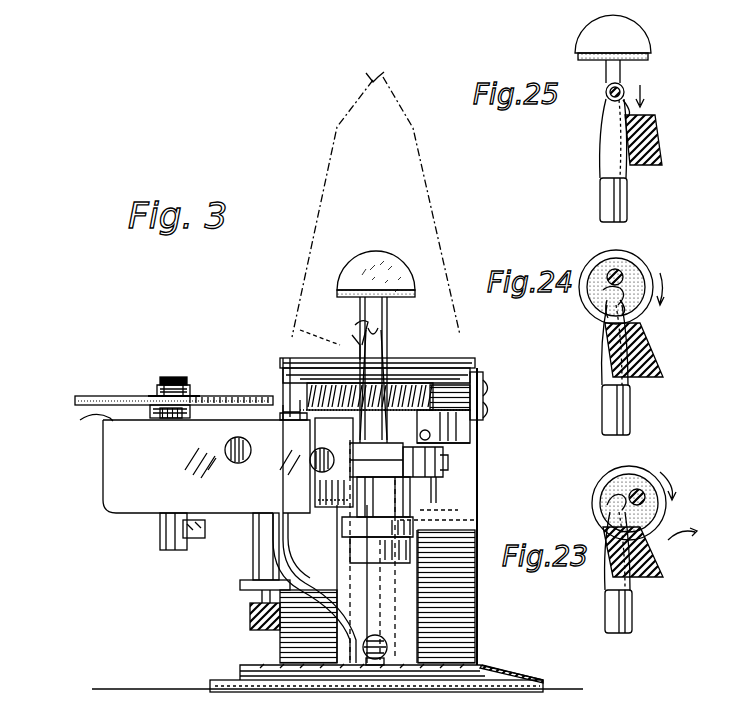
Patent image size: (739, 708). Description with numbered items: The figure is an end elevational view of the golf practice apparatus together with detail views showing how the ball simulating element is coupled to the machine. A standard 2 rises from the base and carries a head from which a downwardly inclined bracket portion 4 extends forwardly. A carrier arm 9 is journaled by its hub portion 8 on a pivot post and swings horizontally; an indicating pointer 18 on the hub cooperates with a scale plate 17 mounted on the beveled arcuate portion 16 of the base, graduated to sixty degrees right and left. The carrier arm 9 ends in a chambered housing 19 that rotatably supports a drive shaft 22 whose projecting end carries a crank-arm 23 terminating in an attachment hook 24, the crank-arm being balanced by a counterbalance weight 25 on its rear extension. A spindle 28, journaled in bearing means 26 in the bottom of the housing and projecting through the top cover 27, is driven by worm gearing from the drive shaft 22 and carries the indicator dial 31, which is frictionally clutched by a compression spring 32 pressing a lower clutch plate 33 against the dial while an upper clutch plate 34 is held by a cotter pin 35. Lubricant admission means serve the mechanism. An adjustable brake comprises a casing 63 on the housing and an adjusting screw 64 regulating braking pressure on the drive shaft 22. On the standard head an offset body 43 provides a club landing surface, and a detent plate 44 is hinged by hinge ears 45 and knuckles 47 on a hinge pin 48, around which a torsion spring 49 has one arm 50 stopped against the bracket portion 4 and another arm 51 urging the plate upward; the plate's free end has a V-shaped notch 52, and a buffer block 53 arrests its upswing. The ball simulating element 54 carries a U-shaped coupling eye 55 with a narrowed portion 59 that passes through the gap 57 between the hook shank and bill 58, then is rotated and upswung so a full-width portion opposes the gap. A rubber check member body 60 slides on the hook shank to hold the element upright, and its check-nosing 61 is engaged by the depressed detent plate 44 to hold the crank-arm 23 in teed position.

In FIG. 3, the standard 2 is at (458, 510).
In FIG. 3, the bracket portion 4 is at (468, 437).
In FIG. 3, the hub portion 8 is at (430, 598).
In FIG. 3, the carrier arm 9 is at (283, 550).
In FIG. 3, the arcuate portion 16 is at (530, 680).
In FIG. 3, the scale plate 17 is at (488, 665).
In FIG. 3, the indicating pointer 18 is at (373, 665).
In FIG. 3, the chambered housing 19 is at (115, 470).
In FIG. 3, the drive shaft 22 is at (448, 457).
In FIG. 3, the crank-arm 23 is at (364, 432).
In FIG. 25, the crank-arm 23 is at (622, 205).
In FIG. 24, the crank-arm 23 is at (604, 413).
In FIG. 23, the crank-arm 23 is at (628, 613).
In FIG. 3, the attachment hook 24 is at (390, 325).
In FIG. 25, the attachment hook 24 is at (605, 92).
In FIG. 24, the attachment hook 24 is at (622, 275).
In FIG. 23, the attachment hook 24 is at (637, 488).
In FIG. 3, the counterbalance weight 25 is at (413, 527).
In FIG. 3, the bearing means 26 is at (158, 541).
In FIG. 3, the top cover 27 is at (86, 421).
In FIG. 3, the spindle 28 is at (186, 377).
In FIG. 3, the indicator dial 31 is at (108, 396).
In FIG. 3, the compression spring 32 is at (178, 418).
In FIG. 3, the lower clutch plate 33 is at (158, 418).
In FIG. 3, the upper clutch plate 34 is at (152, 396).
In FIG. 3, the cotter pin 35 is at (187, 388).
In FIG. 3, the offset body 43 is at (458, 358).
In FIG. 3, the detent plate 44 is at (338, 175).
In FIG. 3, the hinge ears 45 is at (485, 407).
In FIG. 3, the hinge knuckles 47 is at (490, 383).
In FIG. 3, the hinge pin 48 is at (483, 372).
In FIG. 3, the torsion spring 49 is at (443, 392).
In FIG. 3, the spring arm 50 is at (437, 490).
In FIG. 3, the spring arm 51 is at (300, 328).
In FIG. 3, the V-shaped notch 52 is at (376, 74).
In FIG. 3, the buffer block 53 is at (296, 420).
In FIG. 3, the ball simulating element 54 is at (382, 257).
In FIG. 25, the ball simulating element 54 is at (635, 35).
In FIG. 24, the ball simulating element 54 is at (630, 262).
In FIG. 23, the ball simulating element 54 is at (605, 478).
In FIG. 3, the coupling eye 55 is at (380, 316).
In FIG. 25, the coupling eye 55 is at (622, 72).
In FIG. 24, the coupling eye 55 is at (605, 292).
In FIG. 23, the coupling eye 55 is at (668, 505).
In FIG. 25, the hook gap 57 is at (627, 106).
In FIG. 24, the hook gap 57 is at (630, 312).
In FIG. 25, the bill 58 is at (640, 88).
In FIG. 24, the bill 58 is at (663, 300).
In FIG. 3, the narrowed portion 59 is at (352, 320).
In FIG. 24, the narrowed portion 59 is at (605, 318).
In FIG. 23, the narrowed portion 59 is at (608, 512).
In FIG. 3, the check member body 60 is at (350, 335).
In FIG. 25, the check member body 60 is at (599, 150).
In FIG. 24, the check member body 60 is at (601, 358).
In FIG. 23, the check member body 60 is at (603, 570).
In FIG. 25, the check-nosing 61 is at (655, 165).
In FIG. 24, the check-nosing 61 is at (655, 377).
In FIG. 23, the check-nosing 61 is at (655, 577).
In FIG. 3, the brake casing 63 is at (256, 526).
In FIG. 3, the adjusting screw 64 is at (256, 597).